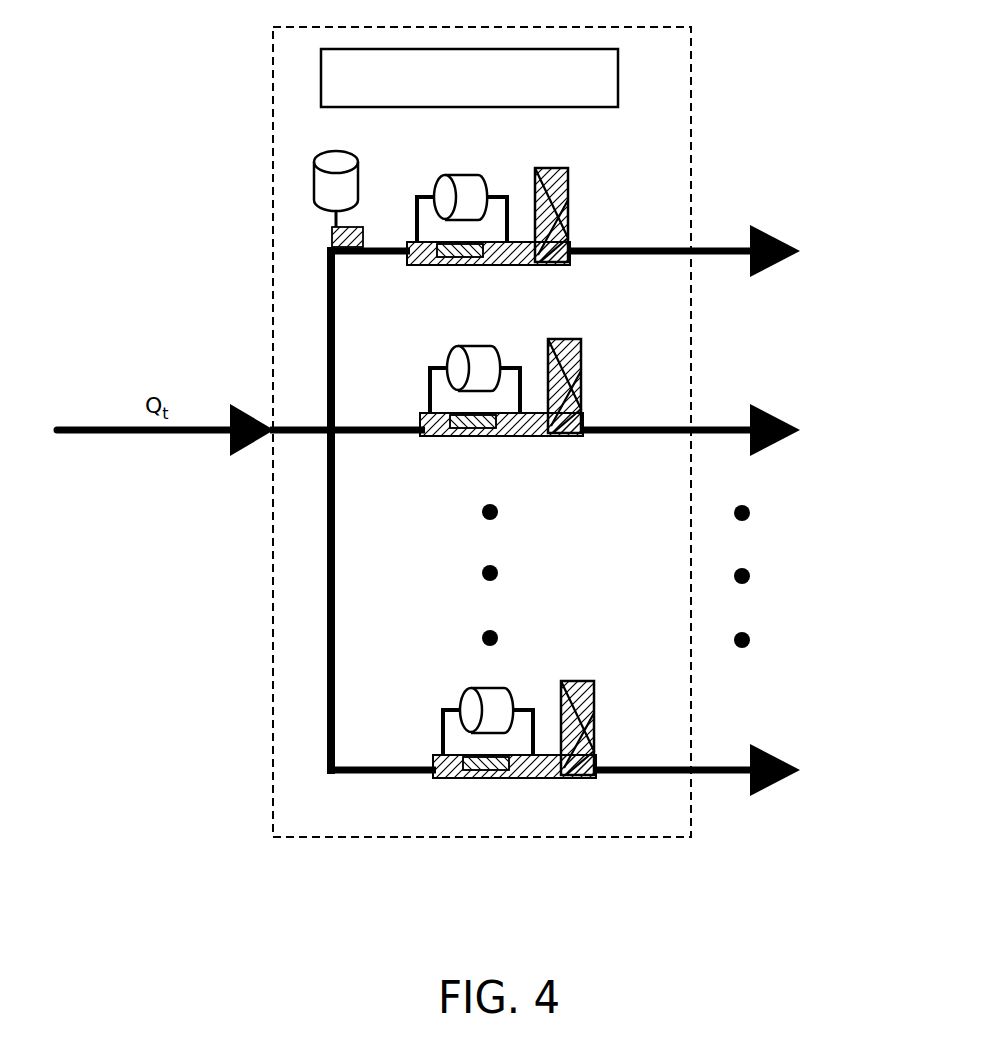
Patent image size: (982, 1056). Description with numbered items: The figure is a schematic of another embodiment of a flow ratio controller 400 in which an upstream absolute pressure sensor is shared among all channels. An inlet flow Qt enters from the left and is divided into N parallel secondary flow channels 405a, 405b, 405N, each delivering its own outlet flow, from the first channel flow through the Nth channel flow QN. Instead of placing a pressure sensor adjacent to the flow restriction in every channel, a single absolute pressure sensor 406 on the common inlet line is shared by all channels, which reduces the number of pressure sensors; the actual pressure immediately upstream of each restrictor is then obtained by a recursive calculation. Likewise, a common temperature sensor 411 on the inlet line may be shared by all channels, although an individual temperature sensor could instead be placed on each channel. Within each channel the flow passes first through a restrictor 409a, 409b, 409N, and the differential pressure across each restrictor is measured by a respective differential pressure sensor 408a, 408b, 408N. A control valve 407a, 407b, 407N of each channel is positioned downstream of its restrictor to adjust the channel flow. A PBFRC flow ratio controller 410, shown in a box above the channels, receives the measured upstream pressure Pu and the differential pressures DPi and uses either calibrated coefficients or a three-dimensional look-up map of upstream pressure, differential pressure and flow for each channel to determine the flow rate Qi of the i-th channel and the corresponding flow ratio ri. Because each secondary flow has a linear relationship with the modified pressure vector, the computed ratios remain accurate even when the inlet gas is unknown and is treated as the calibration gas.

The flow ratio controller 400 is at (691, 95).
The channel 405a is at (793, 248).
The channel 405b is at (790, 425).
The channel 405N is at (790, 766).
The absolute pressure sensor 406 is at (338, 152).
The control valve 407a is at (561, 205).
The control valve 407b is at (583, 372).
The control valve 407N is at (594, 712).
The differential pressure sensor 408a is at (455, 177).
The differential pressure sensor 408b is at (482, 346).
The differential pressure sensor 408N is at (463, 692).
The restrictor 409a is at (440, 265).
The restrictor 409b is at (463, 438).
The restrictor 409N is at (468, 782).
The flow ratio controller 410 is at (603, 108).
The temperature sensor 411 is at (368, 224).